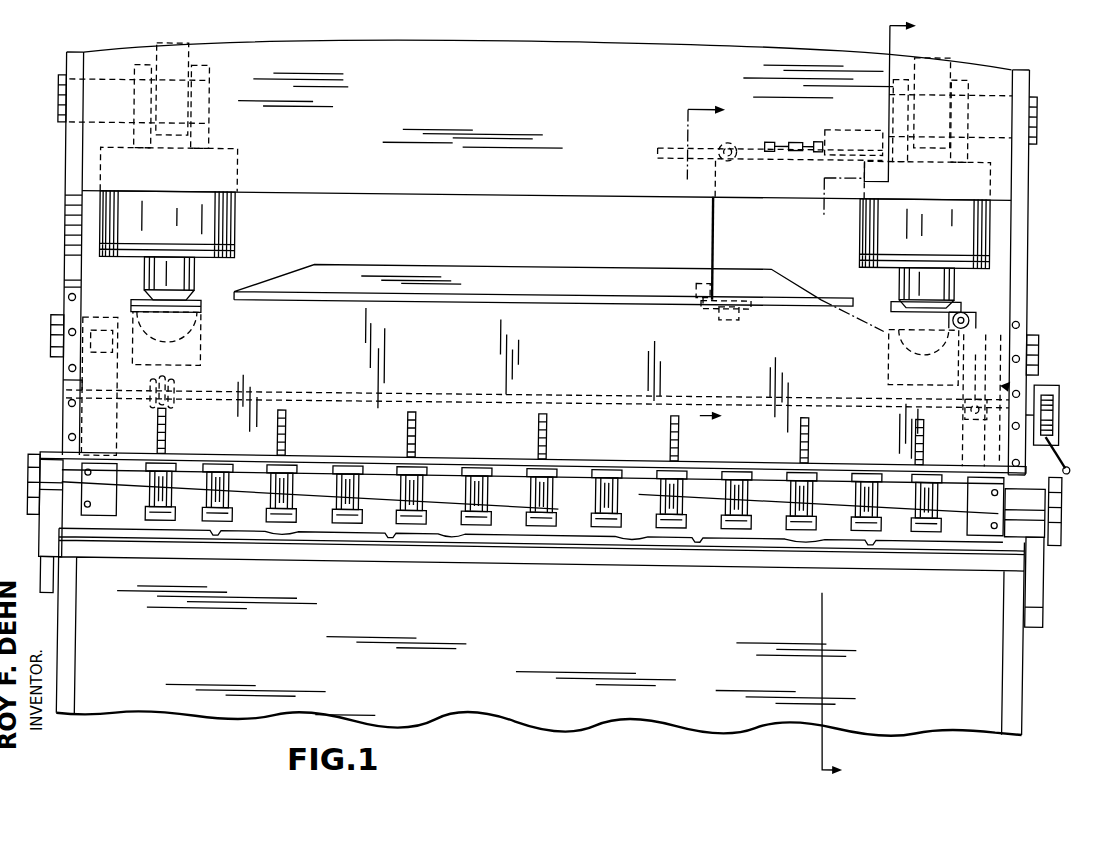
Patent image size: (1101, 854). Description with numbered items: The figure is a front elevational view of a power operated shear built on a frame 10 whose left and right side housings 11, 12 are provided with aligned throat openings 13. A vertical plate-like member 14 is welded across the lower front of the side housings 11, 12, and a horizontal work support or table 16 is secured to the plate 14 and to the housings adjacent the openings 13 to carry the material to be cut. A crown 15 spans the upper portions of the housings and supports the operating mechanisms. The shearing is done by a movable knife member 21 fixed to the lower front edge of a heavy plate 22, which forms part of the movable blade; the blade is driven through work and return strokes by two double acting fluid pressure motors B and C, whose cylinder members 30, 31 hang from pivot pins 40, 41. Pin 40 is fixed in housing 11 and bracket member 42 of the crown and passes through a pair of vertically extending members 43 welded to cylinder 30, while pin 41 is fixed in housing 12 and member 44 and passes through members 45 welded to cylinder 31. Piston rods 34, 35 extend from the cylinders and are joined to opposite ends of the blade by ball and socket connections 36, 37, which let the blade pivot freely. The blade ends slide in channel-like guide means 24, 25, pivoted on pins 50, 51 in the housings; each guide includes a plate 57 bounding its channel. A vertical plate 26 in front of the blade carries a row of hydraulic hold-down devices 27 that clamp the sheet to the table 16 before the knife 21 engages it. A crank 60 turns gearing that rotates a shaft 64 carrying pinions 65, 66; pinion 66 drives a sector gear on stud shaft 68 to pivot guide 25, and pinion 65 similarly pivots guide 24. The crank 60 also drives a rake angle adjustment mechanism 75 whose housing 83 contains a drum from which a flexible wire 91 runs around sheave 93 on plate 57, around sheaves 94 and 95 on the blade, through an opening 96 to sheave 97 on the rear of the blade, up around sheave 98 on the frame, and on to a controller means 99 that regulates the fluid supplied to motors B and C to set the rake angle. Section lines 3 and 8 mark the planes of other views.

The frame 10 is at (60, 69).
The side housing 11 is at (63, 162).
The side housing 12 is at (1026, 170).
The aligned openings 13 is at (80, 545).
The vertical plate-like member 14 is at (597, 728).
The crown 15 is at (592, 42).
The work support table 16 is at (328, 540).
The movable knife member 21 is at (585, 536).
The heavy plate 22 is at (527, 271).
The guide means 24 is at (82, 385).
The guide means 25 is at (1010, 380).
The vertical plate 26 is at (480, 342).
The hydraulic hold-down devices 27 is at (165, 527).
The cylinder member 30 is at (108, 233).
The cylinder member 31 is at (880, 243).
The piston rod 34 is at (193, 282).
The piston rod 35 is at (898, 285).
The ball and socket connection 36 is at (196, 320).
The ball and socket connection 37 is at (888, 345).
The pivot pin 40 is at (55, 108).
The pivot pin 41 is at (1034, 122).
The bracket member 42 is at (172, 47).
The vertically extending members 43 is at (200, 69).
The member 44 is at (947, 56).
The vertically extending members 45 is at (965, 78).
The pin 50 is at (50, 344).
The pin 51 is at (1038, 345).
The plate 57 is at (108, 522).
The crank 60 is at (1062, 460).
The shaft 64 is at (576, 387).
The pinion 65 is at (72, 428).
The pinion 66 is at (975, 430).
The stud shaft 68 is at (29, 486).
The rake angle adjustment mechanism 75 is at (1059, 431).
The housing 83 is at (1059, 384).
The flexible wire 91 is at (713, 238).
The sheave 93 is at (965, 412).
The sheave 94 is at (963, 308).
The sheave 95 is at (738, 312).
The opening 96 is at (712, 307).
The sheave 97 is at (696, 282).
The sheave 98 is at (733, 145).
The controller means 99 is at (840, 127).
The section line 3 is at (872, 395).
The section line 8 is at (716, 261).
The fluid pressure motor B is at (233, 240).
The fluid pressure motor C is at (858, 226).